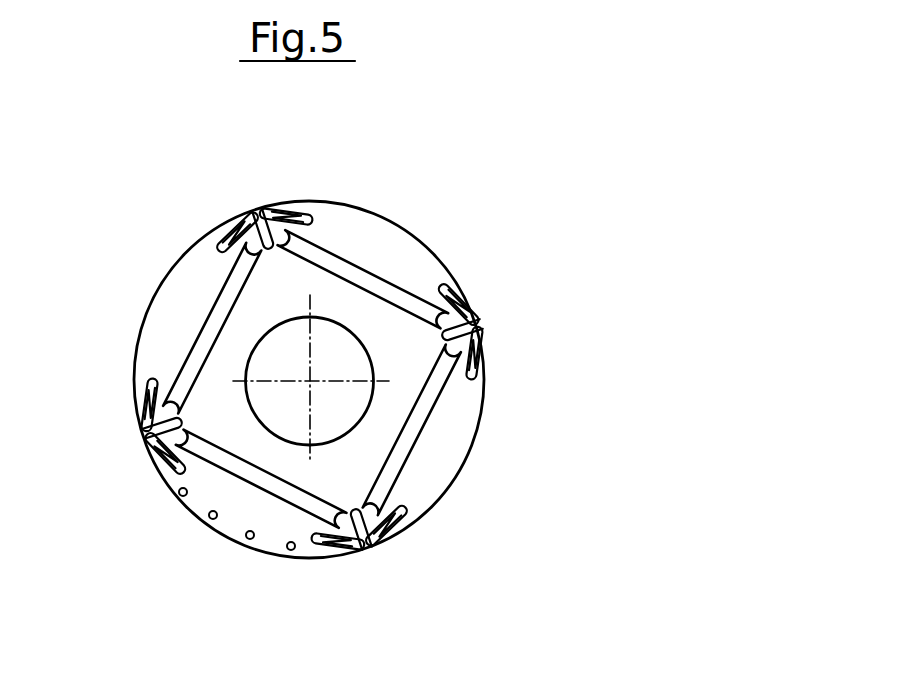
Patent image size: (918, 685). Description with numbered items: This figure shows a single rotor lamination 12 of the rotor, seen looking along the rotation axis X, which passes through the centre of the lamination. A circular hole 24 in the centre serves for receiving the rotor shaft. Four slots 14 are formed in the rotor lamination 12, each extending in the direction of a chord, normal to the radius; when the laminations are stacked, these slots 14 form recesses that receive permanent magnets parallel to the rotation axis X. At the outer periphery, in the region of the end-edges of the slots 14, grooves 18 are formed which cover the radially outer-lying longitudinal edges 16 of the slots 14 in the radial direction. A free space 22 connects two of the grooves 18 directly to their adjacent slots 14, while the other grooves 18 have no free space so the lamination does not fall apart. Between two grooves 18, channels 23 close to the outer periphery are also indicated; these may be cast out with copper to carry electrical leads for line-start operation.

The rotor lamination 12 is at (483, 430).
The slot 14 is at (262, 492).
The longitudinal edge 16 is at (145, 398).
The groove 18 is at (140, 430).
The free space 22 is at (138, 430).
The channel 23 is at (210, 517).
The circular hole 24 is at (372, 355).
The rotation axis X is at (314, 381).